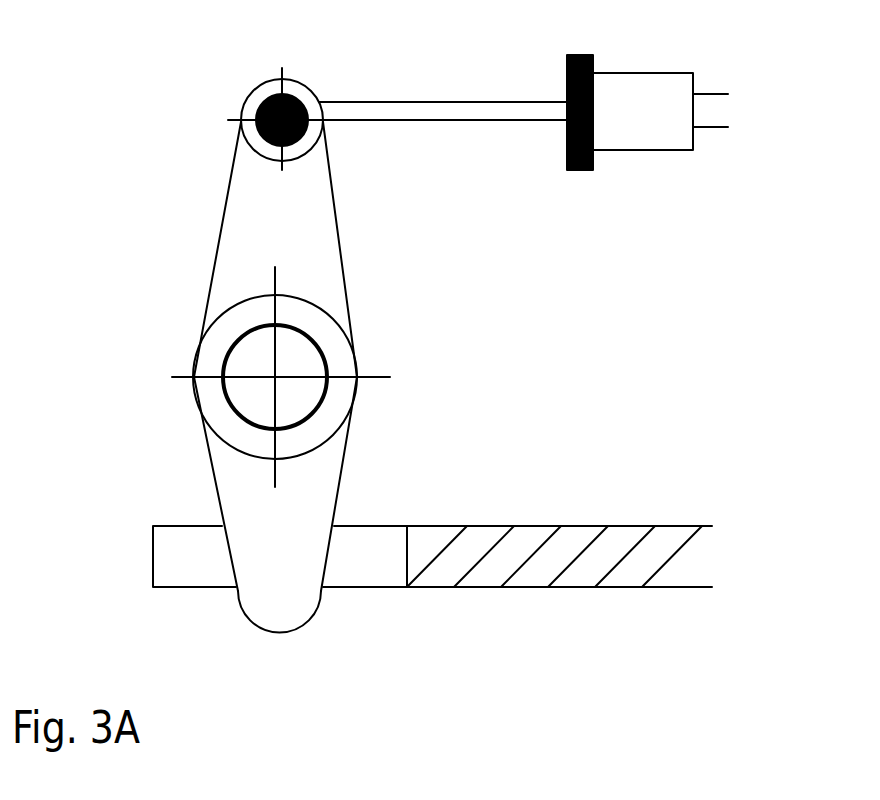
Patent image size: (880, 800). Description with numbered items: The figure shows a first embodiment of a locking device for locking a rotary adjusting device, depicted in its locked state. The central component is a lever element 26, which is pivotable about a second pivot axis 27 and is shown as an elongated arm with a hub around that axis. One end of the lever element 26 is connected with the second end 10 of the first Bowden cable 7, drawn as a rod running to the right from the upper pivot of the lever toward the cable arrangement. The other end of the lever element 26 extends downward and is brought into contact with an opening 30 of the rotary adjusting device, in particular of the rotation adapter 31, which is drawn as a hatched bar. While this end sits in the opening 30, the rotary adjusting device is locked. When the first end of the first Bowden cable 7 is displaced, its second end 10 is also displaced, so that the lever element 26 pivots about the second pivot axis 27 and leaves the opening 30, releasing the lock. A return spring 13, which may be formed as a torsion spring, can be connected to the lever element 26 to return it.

The first Bowden cable 7 is at (705, 106).
The second end of the first Bowden cable 10 is at (430, 108).
The return spring 13 is at (327, 359).
The lever element 26 is at (282, 578).
The second pivot axis 27 is at (275, 377).
The opening 30 is at (168, 553).
The rotation adapter 31 is at (615, 540).